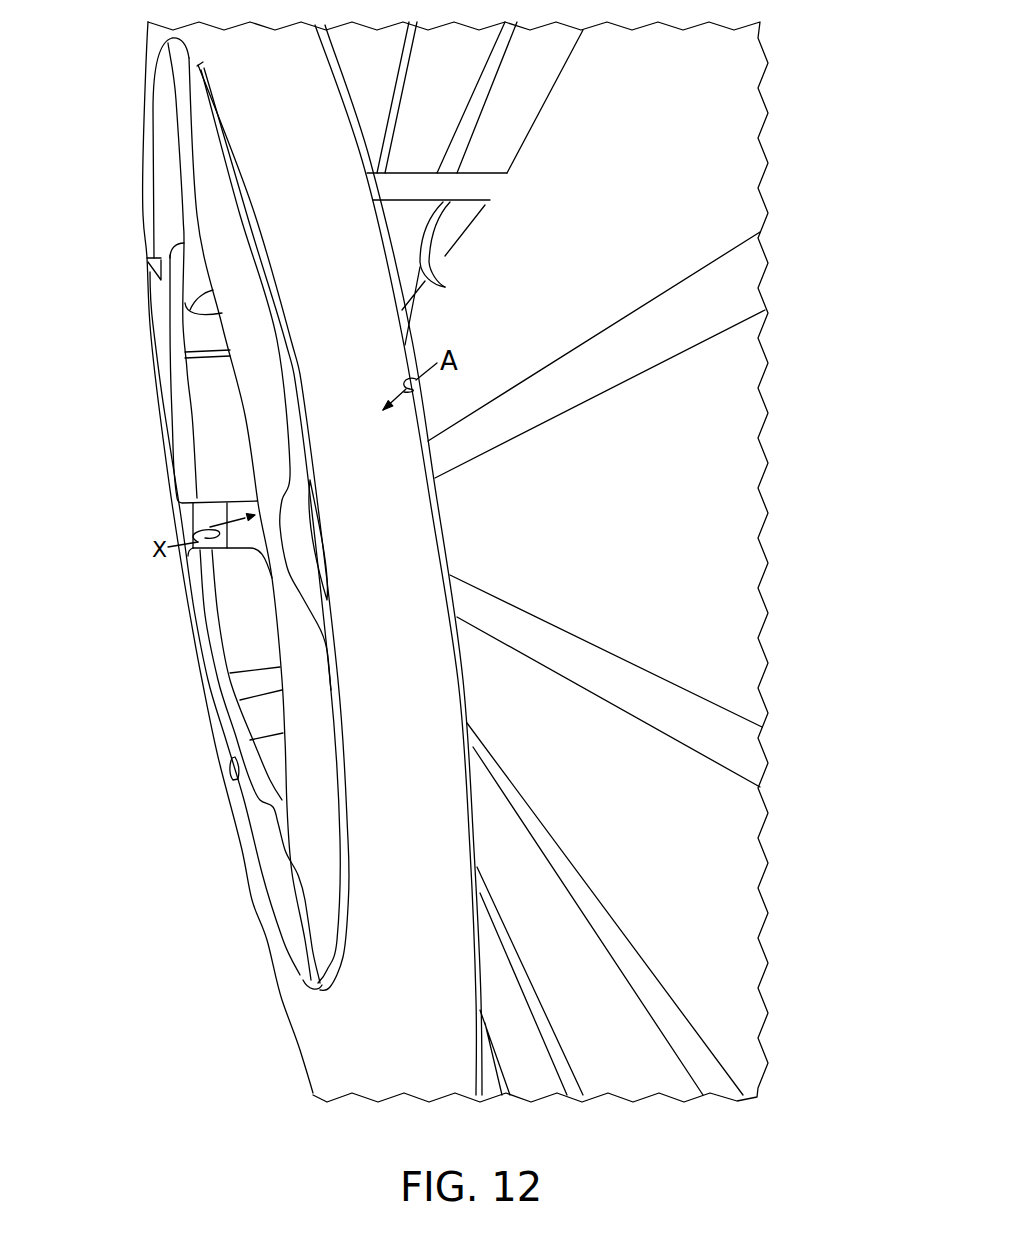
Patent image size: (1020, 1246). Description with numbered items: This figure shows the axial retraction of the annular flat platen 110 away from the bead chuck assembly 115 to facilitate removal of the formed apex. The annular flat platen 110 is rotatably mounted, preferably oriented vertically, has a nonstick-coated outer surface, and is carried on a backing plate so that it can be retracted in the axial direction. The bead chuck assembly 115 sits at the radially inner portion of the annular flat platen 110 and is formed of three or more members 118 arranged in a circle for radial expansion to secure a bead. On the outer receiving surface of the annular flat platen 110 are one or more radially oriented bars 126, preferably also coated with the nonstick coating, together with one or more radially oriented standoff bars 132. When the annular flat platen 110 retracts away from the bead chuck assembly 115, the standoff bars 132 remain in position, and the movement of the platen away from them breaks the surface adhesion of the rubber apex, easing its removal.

The annular flat platen 110 is at (722, 110).
The bead chuck assembly 115 is at (275, 915).
The bead chuck members 118 is at (163, 103).
The bars 126 is at (733, 295).
The standoff bars 132 is at (728, 752).